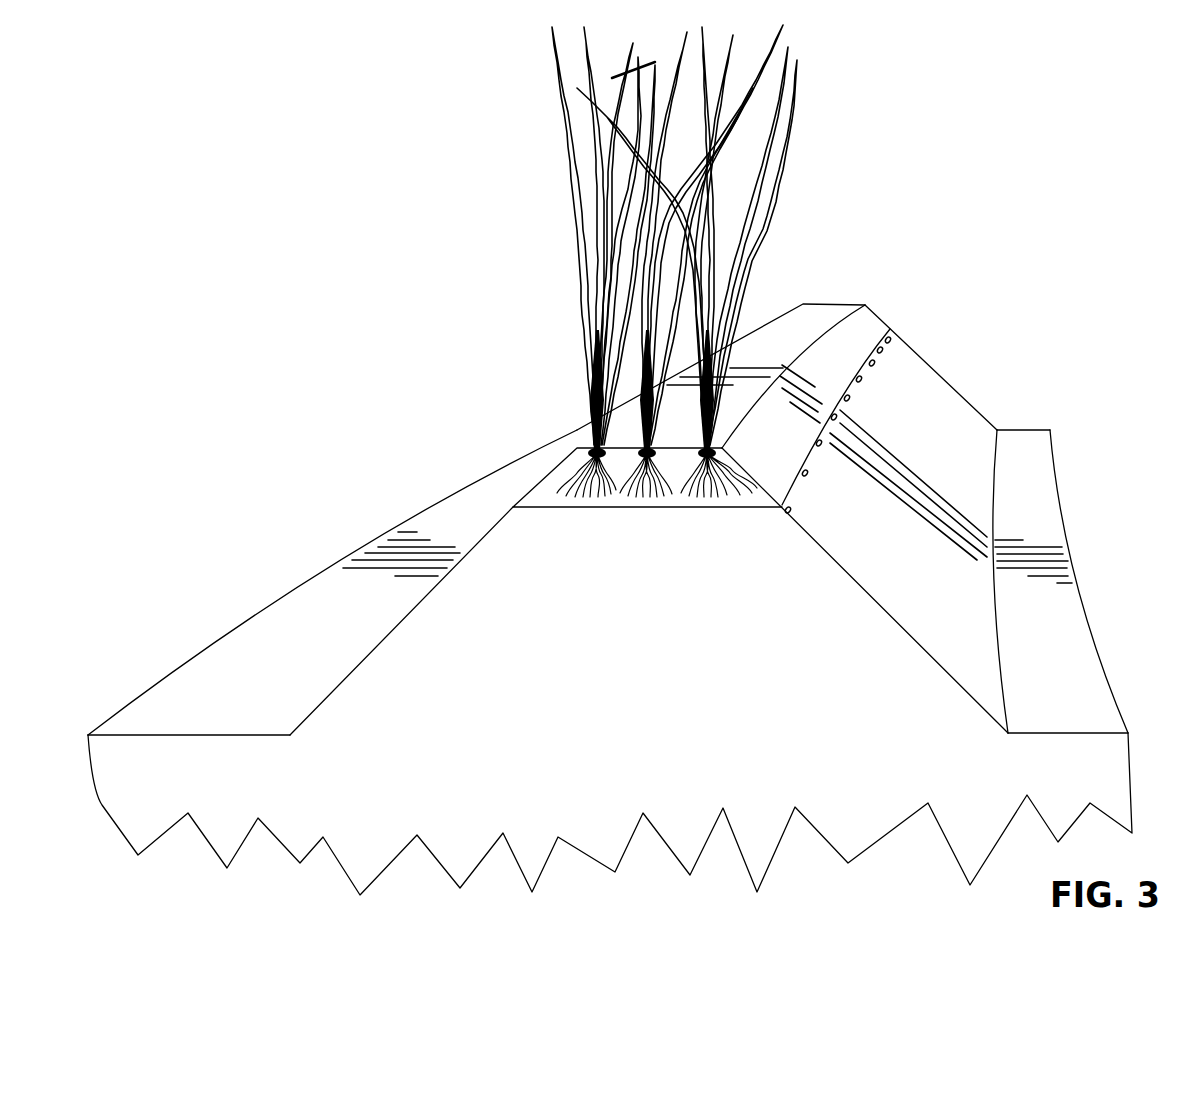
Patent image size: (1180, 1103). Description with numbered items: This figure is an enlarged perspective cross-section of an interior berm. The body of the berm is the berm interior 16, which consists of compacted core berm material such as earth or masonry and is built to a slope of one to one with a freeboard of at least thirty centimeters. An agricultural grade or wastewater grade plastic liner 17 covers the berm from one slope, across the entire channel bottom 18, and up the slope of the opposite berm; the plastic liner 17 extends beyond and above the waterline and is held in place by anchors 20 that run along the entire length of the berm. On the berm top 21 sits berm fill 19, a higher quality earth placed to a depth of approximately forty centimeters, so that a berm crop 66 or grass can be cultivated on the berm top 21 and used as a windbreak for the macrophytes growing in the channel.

The berm interior 16 is at (802, 572).
The plastic liner 17 is at (930, 655).
The channel bottom 18 is at (217, 665).
The berm fill 19 is at (637, 507).
The anchors 20 is at (779, 518).
The berm top 21 is at (823, 312).
The berm crop 66 is at (578, 253).